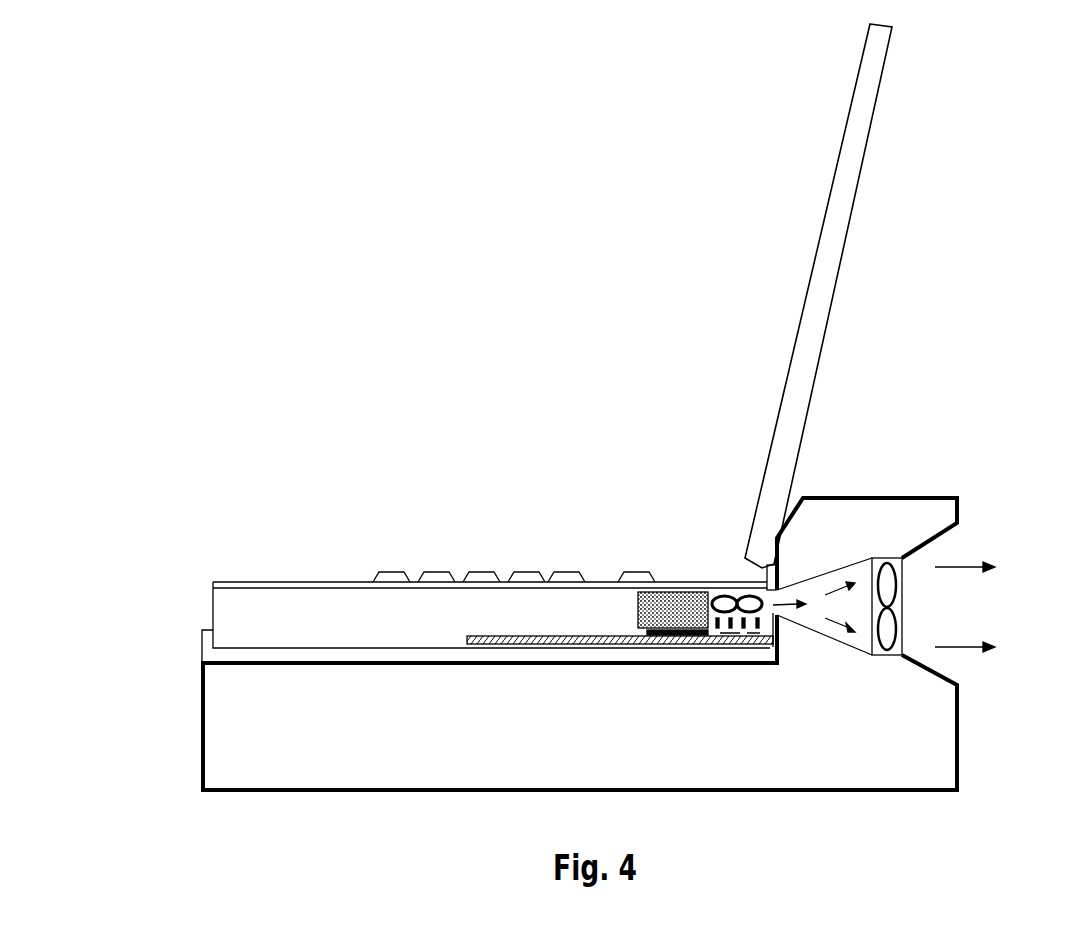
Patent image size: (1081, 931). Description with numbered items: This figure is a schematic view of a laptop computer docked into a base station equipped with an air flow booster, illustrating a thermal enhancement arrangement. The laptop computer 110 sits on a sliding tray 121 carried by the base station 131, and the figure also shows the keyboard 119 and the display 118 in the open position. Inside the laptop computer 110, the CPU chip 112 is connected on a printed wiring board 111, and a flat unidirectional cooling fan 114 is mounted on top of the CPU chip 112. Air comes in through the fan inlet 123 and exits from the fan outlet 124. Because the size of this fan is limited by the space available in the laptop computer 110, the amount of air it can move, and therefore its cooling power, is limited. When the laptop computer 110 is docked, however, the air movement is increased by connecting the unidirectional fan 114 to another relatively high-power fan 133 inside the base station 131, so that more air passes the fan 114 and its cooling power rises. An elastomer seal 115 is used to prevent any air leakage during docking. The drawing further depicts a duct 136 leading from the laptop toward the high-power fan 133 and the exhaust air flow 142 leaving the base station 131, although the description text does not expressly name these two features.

The laptop computer 110 is at (203, 538).
The circuit board 111 is at (483, 636).
The heat spreader 112 is at (642, 632).
The heat generating component 114 is at (637, 608).
The exhaust opening 115 is at (775, 663).
The display lid 118 is at (836, 163).
The keyboard keys 119 is at (393, 571).
The base station tray 121 is at (202, 652).
The air vents 123 is at (740, 628).
The internal fan 124 is at (760, 598).
The base station 131 is at (958, 760).
The exhaust fan 133 is at (888, 558).
The air duct 136 is at (840, 568).
The exhaust airflow 142 is at (948, 545).